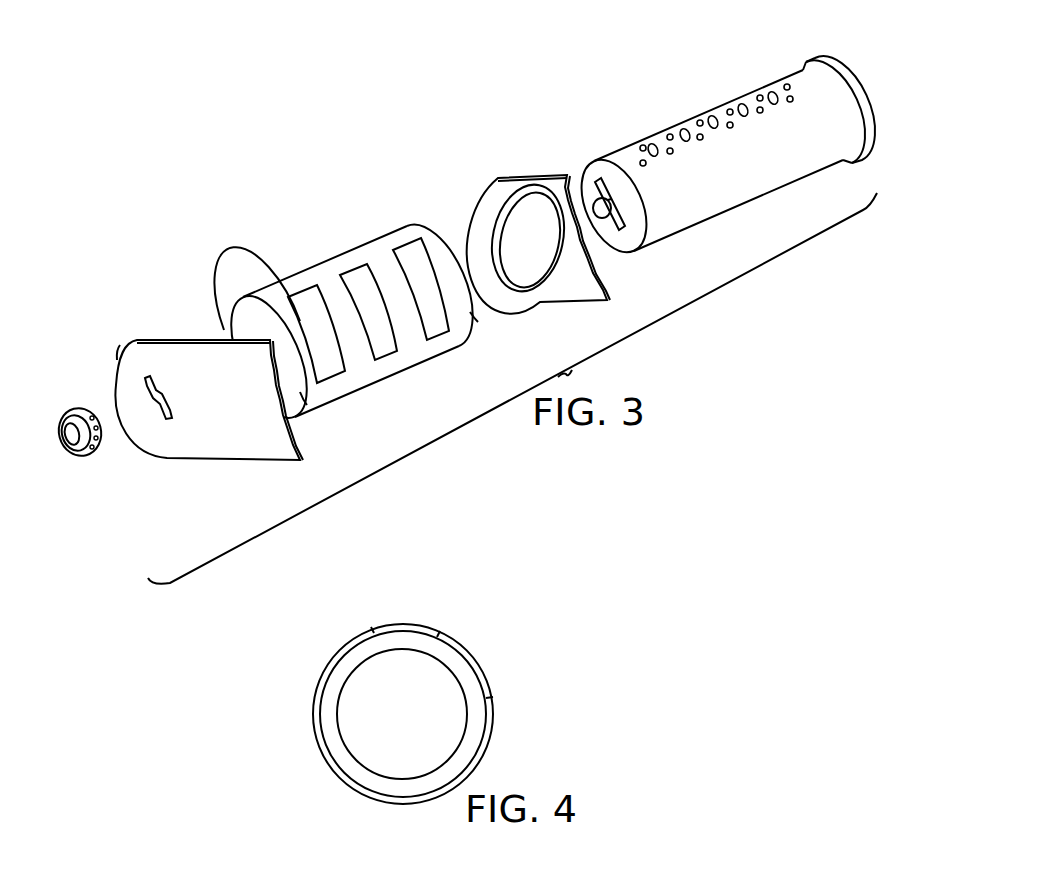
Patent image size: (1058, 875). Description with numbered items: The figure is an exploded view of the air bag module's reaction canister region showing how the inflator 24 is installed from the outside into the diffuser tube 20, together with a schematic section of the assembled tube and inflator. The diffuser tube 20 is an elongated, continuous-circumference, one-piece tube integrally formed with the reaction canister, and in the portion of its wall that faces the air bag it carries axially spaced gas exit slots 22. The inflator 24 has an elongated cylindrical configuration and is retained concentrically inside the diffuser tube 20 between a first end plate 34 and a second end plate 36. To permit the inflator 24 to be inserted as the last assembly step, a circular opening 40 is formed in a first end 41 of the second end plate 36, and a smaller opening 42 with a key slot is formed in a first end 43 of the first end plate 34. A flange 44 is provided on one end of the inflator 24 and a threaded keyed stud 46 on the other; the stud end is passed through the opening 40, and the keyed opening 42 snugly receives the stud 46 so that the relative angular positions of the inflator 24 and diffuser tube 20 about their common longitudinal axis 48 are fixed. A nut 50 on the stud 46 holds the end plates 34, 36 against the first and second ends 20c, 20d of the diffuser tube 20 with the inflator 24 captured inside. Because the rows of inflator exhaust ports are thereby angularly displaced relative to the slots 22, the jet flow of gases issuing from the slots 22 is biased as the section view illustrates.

In FIG. 3, the diffuser tube 20 is at (408, 222).
In FIG. 4, the diffuser tube 20 is at (488, 698).
In FIG. 3, the first end of the diffuser tube 20c is at (307, 397).
In FIG. 3, the second end of the diffuser tube 20d is at (478, 317).
In FIG. 4, the diffuser slots 22 is at (425, 627).
In FIG. 3, the inflator 24 is at (725, 106).
In FIG. 4, the inflator 24 is at (350, 687).
In FIG. 3, the first end plate 34 is at (125, 390).
In FIG. 3, the second end plate 36 is at (573, 293).
In FIG. 3, the circular opening 40 is at (522, 191).
In FIG. 3, the first end of the second end plate 41 is at (488, 205).
In FIG. 3, the keyed opening 42 is at (157, 383).
In FIG. 3, the first end of the first end plate 43 is at (115, 360).
In FIG. 3, the flange 44 is at (836, 62).
In FIG. 3, the threaded keyed stud 46 is at (594, 178).
In FIG. 3, the longitudinal axis 48 is at (202, 373).
In FIG. 3, the nut 50 is at (93, 453).